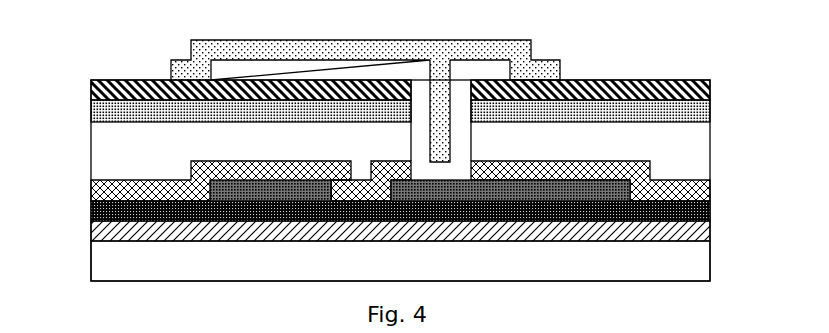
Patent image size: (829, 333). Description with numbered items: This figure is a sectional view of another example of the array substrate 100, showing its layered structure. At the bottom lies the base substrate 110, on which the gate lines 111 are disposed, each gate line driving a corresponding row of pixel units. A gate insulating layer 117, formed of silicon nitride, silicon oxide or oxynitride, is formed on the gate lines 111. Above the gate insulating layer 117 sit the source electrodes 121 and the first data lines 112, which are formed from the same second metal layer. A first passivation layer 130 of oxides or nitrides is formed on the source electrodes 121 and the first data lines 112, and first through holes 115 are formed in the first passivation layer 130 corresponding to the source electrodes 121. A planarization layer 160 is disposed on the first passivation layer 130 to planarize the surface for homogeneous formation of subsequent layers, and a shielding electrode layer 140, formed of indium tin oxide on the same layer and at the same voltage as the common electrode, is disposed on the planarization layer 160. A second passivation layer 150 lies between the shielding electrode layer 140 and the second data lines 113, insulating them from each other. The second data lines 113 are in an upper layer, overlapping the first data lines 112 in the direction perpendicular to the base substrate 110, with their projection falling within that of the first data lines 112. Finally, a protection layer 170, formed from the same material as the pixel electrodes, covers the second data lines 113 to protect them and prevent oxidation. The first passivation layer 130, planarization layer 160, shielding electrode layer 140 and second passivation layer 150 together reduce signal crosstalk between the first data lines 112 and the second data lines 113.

The array substrate 100 is at (128, 24).
The base substrate 110 is at (110, 258).
The gate line 111 is at (689, 230).
The first data line 112 is at (91, 189).
The second data line 113 is at (242, 71).
The first through hole 115 is at (441, 172).
The gate insulating layer 117 is at (91, 216).
The source electrode 121 is at (599, 189).
The first passivation layer 130 is at (630, 165).
The shielding electrode layer 140 is at (627, 108).
The second passivation layer 150 is at (627, 87).
The planarization layer 160 is at (153, 152).
The protection layer 170 is at (518, 53).